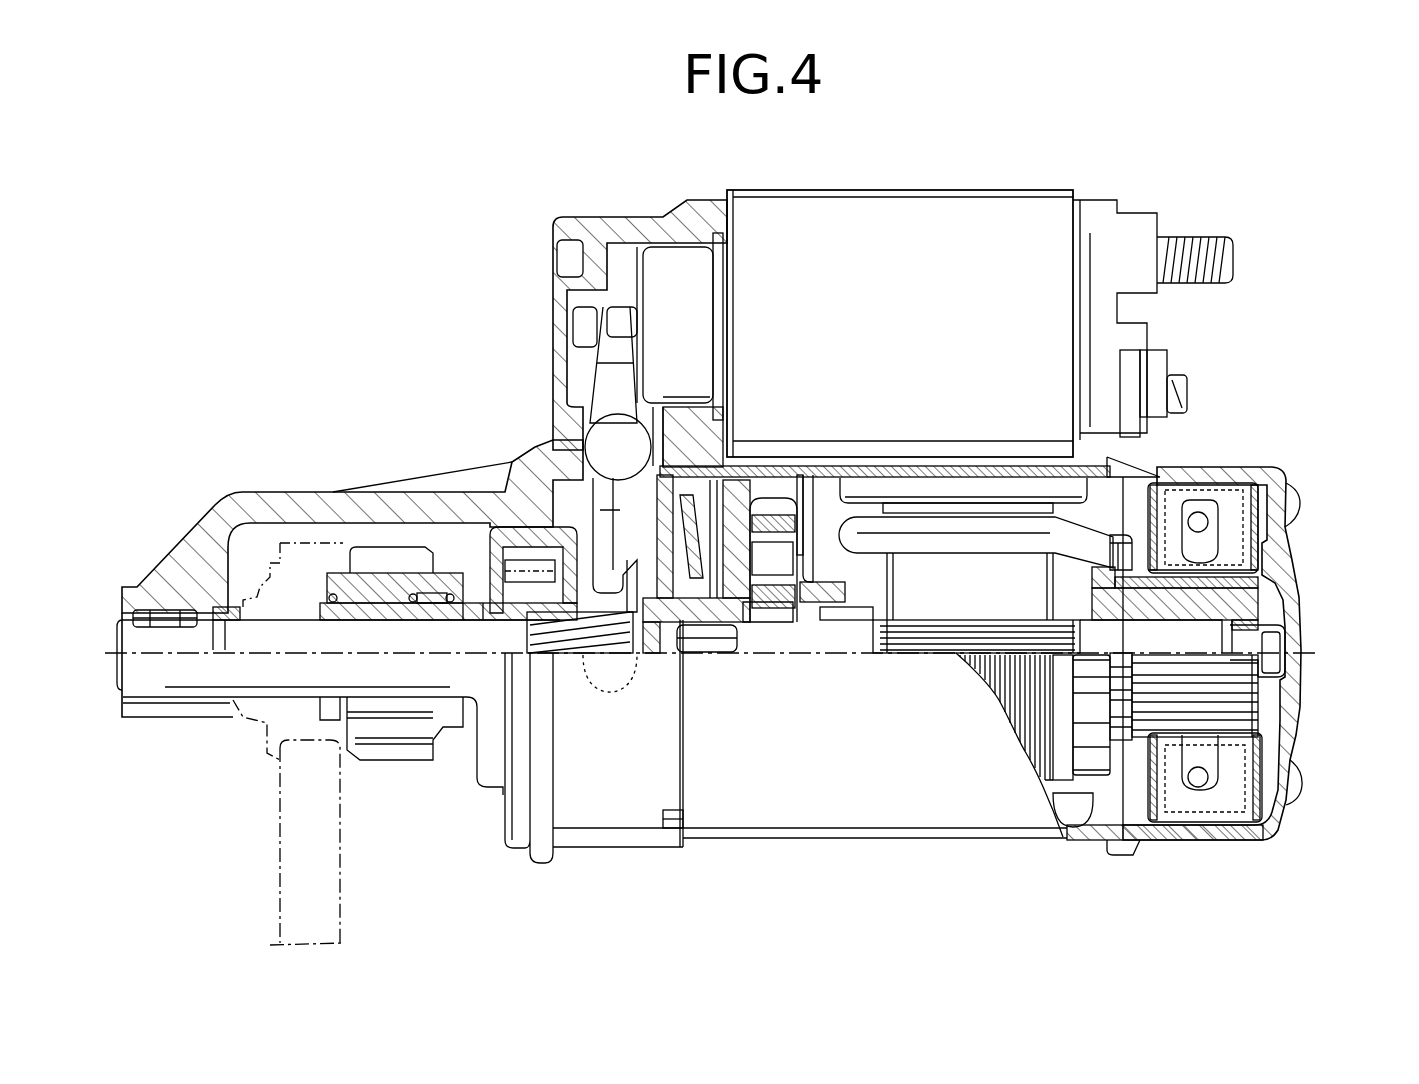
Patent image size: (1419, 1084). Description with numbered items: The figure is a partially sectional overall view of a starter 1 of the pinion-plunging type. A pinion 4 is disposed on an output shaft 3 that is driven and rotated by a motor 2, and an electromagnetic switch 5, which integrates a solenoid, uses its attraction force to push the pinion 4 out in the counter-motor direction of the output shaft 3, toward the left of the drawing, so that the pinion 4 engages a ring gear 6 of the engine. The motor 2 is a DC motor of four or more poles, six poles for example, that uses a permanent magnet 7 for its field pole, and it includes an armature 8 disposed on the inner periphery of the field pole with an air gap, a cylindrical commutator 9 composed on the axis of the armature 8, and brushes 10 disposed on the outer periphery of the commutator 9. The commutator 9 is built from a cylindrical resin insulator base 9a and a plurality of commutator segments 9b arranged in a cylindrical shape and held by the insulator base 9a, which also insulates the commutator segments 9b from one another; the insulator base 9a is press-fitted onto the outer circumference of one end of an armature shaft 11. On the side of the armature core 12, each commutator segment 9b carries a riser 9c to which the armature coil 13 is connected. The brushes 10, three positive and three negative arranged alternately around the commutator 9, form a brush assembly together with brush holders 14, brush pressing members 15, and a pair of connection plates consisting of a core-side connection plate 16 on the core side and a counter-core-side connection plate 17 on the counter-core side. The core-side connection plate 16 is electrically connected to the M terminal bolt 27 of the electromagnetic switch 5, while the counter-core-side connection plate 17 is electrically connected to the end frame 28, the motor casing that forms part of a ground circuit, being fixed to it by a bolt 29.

The starter 1 is at (754, 529).
The motor 2 is at (1003, 850).
The output shaft 3 is at (300, 630).
The pinion 4 is at (377, 557).
The electromagnetic switch 5 is at (912, 188).
The ring gear 6 is at (280, 867).
The permanent magnet 7 is at (983, 487).
The armature 8 is at (1032, 730).
The commutator 9 is at (1248, 557).
The insulator base 9a is at (1242, 637).
The commutator segments 9b is at (1240, 595).
The riser 9c is at (1122, 540).
The brushes 10 is at (1228, 666).
The armature shaft 11 is at (979, 633).
The armature core 12 is at (955, 597).
The armature coil 13 is at (933, 543).
The brush holders 14 is at (1237, 817).
The brush pressing members 15 is at (1210, 820).
The core-side connection plate 16 is at (1147, 823).
The counter-core-side connection plate 17 is at (1262, 820).
The M terminal bolt 27 is at (1177, 388).
The end frame 28 is at (1285, 582).
The bolt 29 is at (1295, 502).